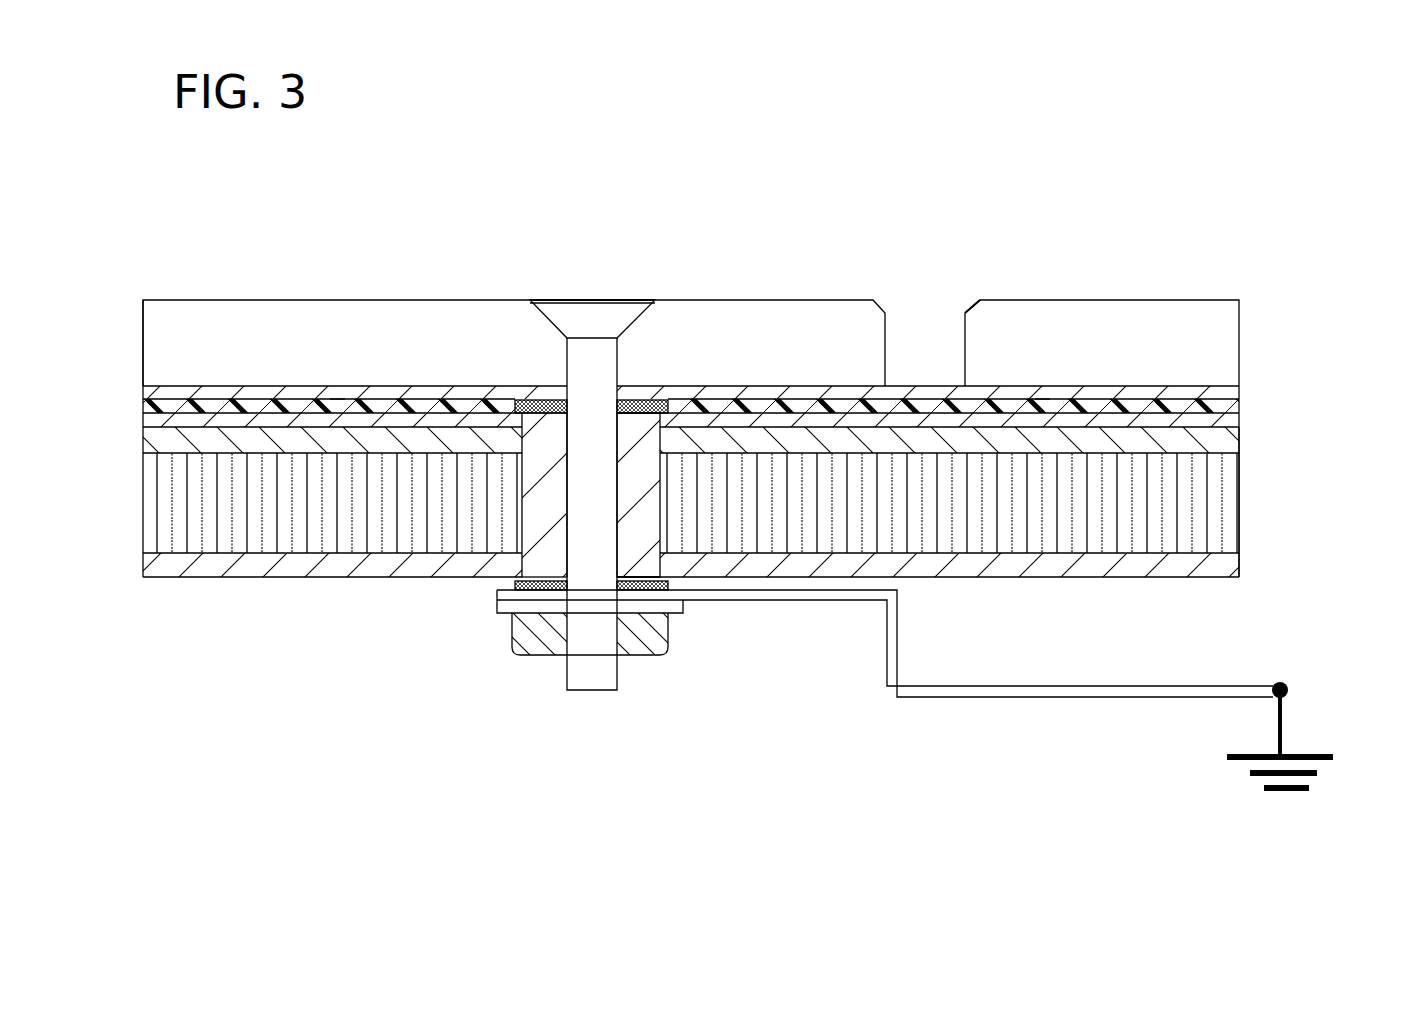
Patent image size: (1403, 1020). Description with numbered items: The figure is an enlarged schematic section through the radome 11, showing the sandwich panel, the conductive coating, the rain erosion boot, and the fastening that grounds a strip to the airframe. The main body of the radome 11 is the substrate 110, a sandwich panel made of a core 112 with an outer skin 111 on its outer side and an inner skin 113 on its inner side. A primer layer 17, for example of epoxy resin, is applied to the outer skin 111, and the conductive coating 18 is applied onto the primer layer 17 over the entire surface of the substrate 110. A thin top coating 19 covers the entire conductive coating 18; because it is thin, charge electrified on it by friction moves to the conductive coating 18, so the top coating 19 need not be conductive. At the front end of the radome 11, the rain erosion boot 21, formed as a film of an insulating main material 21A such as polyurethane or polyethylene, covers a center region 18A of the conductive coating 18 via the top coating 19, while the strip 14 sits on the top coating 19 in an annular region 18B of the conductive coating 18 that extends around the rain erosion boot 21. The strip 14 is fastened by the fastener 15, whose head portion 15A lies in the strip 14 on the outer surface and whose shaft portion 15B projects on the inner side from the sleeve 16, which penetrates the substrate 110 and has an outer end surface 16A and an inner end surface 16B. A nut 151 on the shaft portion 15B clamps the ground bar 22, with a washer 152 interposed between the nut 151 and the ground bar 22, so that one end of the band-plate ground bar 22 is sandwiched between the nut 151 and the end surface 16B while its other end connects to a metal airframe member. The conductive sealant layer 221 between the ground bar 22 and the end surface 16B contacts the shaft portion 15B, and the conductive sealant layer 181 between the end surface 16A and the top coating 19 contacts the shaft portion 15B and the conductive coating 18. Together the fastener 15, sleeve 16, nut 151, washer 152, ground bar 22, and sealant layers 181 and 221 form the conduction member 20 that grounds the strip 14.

The radome 11 is at (1170, 182).
The strip 14 is at (267, 300).
The fastener 15 is at (619, 297).
The head portion 15A is at (558, 300).
The shaft portion 15B is at (597, 680).
The sleeve 16 is at (665, 527).
The end surface 16A is at (656, 385).
The end surface 16B is at (650, 656).
The primer layer 17 is at (1242, 420).
The conductive coating 18 is at (1242, 406).
The center region 18A is at (1045, 403).
The annular region 18B is at (338, 403).
The top coating 19 is at (1242, 391).
The conduction member 20 is at (505, 672).
The rain erosion boot 21 is at (1210, 300).
The main material 21A is at (1116, 300).
The ground bar 22 is at (1088, 686).
The substrate 110 is at (1331, 450).
The outer skin 111 is at (1242, 445).
The core 112 is at (1242, 516).
The inner skin 113 is at (1242, 568).
The nut 151 is at (512, 630).
The washer 152 is at (497, 603).
The conductive sealant layer 181 is at (532, 392).
The conductive sealant layer 221 is at (515, 585).